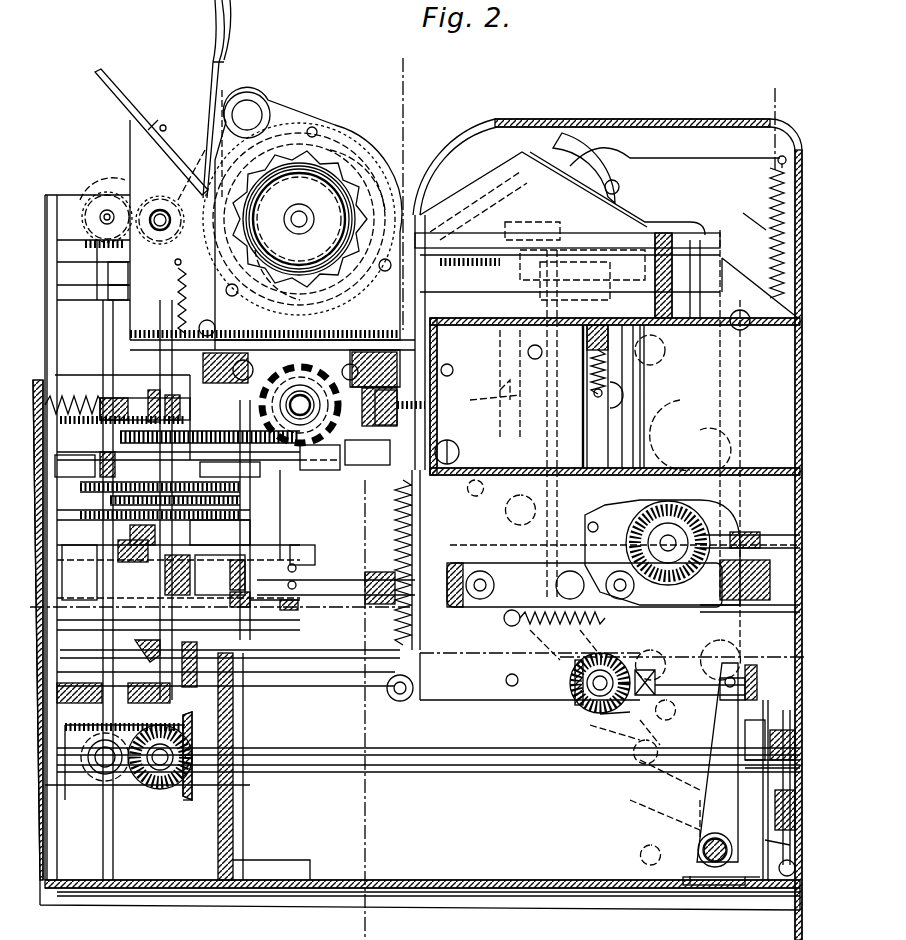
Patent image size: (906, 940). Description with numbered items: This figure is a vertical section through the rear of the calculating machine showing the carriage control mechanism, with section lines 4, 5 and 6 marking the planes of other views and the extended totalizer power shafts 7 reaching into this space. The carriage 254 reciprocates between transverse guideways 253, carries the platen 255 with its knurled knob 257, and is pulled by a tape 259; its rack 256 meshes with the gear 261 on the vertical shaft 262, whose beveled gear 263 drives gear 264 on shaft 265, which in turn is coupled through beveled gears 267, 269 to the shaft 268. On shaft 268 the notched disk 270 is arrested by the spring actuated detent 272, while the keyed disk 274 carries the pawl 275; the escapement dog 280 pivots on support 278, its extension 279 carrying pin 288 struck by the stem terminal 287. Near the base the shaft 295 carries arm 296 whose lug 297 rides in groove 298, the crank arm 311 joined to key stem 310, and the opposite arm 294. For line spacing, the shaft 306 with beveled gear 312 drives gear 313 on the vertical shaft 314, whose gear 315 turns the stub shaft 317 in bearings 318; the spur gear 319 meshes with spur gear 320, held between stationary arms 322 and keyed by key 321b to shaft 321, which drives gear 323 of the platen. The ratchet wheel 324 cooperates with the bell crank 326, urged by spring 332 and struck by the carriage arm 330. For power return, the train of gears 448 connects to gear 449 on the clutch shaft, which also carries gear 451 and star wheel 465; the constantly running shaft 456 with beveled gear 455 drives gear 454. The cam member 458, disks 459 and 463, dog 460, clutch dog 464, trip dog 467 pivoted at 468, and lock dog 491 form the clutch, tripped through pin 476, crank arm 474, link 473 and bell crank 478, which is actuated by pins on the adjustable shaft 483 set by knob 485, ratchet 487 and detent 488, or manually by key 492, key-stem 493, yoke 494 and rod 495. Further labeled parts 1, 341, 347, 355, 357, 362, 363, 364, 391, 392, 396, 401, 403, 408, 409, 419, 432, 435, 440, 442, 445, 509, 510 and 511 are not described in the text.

The machine frame 1 is at (540, 882).
The section line 4— 4 is at (785, 87).
The section line 5— 5 is at (805, 668).
The section line 6— 6 is at (412, 61).
The totalizer power shaft 7 is at (635, 725).
The transverse guideways 253 is at (210, 365).
The carriage 254 is at (395, 345).
The platen 255 is at (137, 118).
The rack 256 is at (295, 420).
The knurled knob 257 is at (352, 200).
The tape 259 is at (302, 515).
The gear 261 is at (240, 370).
The vertical shaft 262 is at (150, 455).
The beveled gear 263 is at (140, 715).
The beveled gear 264 is at (165, 790).
The shaft 265 is at (160, 765).
The beveled gear 267 is at (195, 730).
The shaft 268 is at (445, 760).
The beveled gear 269 is at (188, 800).
The notched disk 270 is at (780, 775).
The spring actuated detent 272 is at (785, 862).
The disk 274 is at (721, 838).
The pawl 275 is at (760, 740).
The support 278 is at (790, 790).
The extension 279 is at (790, 770).
The escapement dog 280 is at (688, 820).
The terminal of key stem 287 is at (770, 760).
The pin 288 is at (780, 770).
The arm 294 is at (760, 880).
The shaft 295 is at (712, 860).
The upwardly extending arm 296 is at (700, 840).
The lug 297 is at (745, 725).
The groove 298 is at (688, 680).
The shaft 306 is at (147, 776).
The key stem 310 is at (652, 800).
The crank arm 311 is at (660, 840).
The beveled gear 312 is at (105, 760).
The beveled gear 313 is at (80, 720).
The vertical shaft 314 is at (94, 297).
The beveled gear 315 is at (103, 245).
The stub shaft 317 is at (104, 214).
The bearings 318 is at (92, 251).
The spur gear 319 is at (115, 178).
The spur gear 320 is at (165, 240).
The shaft 321 is at (175, 280).
The key 321b is at (190, 162).
The stationary arms 322 is at (75, 185).
The gear 323 is at (250, 112).
The ratchet wheel 324 is at (84, 590).
The bell crank 326 is at (115, 395).
The arm 330 is at (160, 400).
The spring 332 is at (78, 440).
The pin 341 is at (748, 335).
The spring 347 is at (770, 215).
The cam 355 is at (572, 135).
The gear 357 is at (580, 672).
The block 362 is at (165, 612).
The link 363 is at (620, 712).
The plate 364 is at (570, 700).
The plate 391 is at (520, 205).
The plate 392 is at (470, 330).
The rod 396 is at (655, 410).
The plate 401 is at (640, 545).
The cam 403 is at (690, 435).
The shaft 408 is at (630, 700).
The lug 409 is at (669, 396).
The rod 419 is at (667, 299).
The link 432 is at (400, 490).
The spring 435 is at (480, 612).
The housing 440 is at (560, 315).
The spring 442 is at (600, 420).
The rod 445 is at (600, 357).
The train of gears 448 is at (120, 515).
The gear 449 is at (155, 500).
The gear 451 is at (110, 498).
The beveled gear 454 is at (185, 640).
The beveled gear 455 is at (195, 648).
The shaft 456 is at (310, 680).
The cam member 458 is at (160, 545).
The disk 459 is at (214, 577).
The dog 460 is at (303, 542).
The disk 463 is at (170, 565).
The clutch dog 464 is at (185, 565).
The star wheel 465 is at (120, 580).
The trip dog 467 is at (250, 570).
The pivot 468 is at (304, 594).
The link 473 is at (345, 500).
The crank arm 474 is at (320, 470).
The pin 476 is at (300, 577).
The bell crank 478 is at (400, 385).
The adjustable shaft 483 is at (170, 471).
The knob 485 is at (355, 420).
The adjustment ratchet 487 is at (262, 398).
The spring actuated detent 488 is at (200, 325).
The lock dog 491 is at (80, 560).
The key 492 is at (540, 232).
The key-stem 493 is at (505, 395).
The yoke 494 is at (445, 540).
The rod 495 is at (320, 575).
The link 509 is at (500, 415).
The bar 510 is at (530, 270).
The pin 511 is at (513, 381).